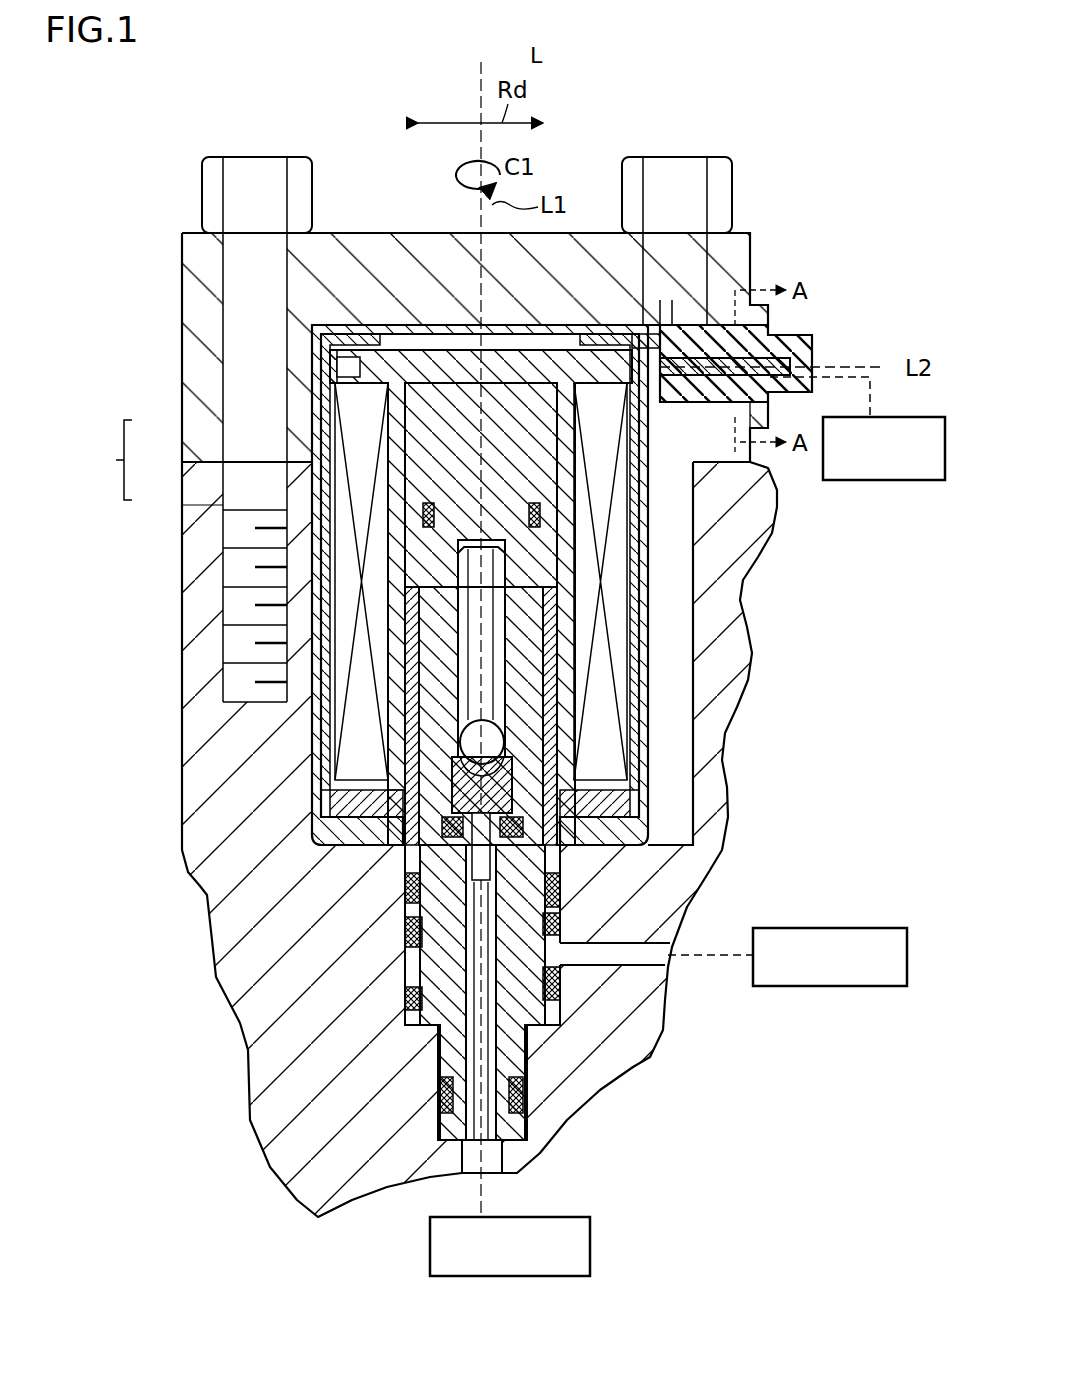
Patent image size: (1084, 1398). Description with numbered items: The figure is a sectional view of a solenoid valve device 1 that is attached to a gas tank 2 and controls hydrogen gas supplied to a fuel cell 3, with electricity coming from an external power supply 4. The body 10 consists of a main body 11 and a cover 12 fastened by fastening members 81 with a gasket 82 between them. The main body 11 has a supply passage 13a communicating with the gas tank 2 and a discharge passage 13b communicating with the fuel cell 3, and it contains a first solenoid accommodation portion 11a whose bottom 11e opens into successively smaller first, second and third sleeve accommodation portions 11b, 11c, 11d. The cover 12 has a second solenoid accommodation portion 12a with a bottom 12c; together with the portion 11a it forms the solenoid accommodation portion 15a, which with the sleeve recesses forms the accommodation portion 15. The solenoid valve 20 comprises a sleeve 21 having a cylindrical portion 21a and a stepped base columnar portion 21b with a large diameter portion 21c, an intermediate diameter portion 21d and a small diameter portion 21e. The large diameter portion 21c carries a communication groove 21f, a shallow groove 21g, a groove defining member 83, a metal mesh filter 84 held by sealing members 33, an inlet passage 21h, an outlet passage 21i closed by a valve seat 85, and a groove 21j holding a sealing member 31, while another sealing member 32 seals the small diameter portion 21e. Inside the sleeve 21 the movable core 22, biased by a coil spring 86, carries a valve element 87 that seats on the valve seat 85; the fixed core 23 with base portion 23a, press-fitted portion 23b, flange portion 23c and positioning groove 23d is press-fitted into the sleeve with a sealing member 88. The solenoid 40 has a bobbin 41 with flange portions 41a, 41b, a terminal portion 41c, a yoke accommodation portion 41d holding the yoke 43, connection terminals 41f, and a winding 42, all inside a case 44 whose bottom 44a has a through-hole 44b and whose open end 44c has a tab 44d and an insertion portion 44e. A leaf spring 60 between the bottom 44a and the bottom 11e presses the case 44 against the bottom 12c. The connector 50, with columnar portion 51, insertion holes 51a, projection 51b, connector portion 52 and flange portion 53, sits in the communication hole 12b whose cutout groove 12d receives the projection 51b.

The solenoid valve device 1 is at (358, 152).
The gas tank 2 is at (860, 928).
The fuel cell 3 is at (591, 1247).
The power supply 4 is at (906, 417).
The body 10 is at (107, 460).
The main body 11 is at (180, 486).
The first solenoid accommodation portion 11a is at (320, 858).
The first sleeve accommodation portion 11b is at (404, 950).
The second sleeve accommodation portion 11c is at (436, 1058).
The third sleeve accommodation portion 11d is at (460, 1138).
The bottom 11e is at (348, 900).
The cover 12 is at (180, 444).
The second solenoid accommodation portion 12a is at (756, 464).
The communication hole 12b is at (748, 430).
The bottom 12c is at (466, 328).
The cutout groove 12d is at (782, 340).
The supply passage 13a is at (688, 945).
The discharge passage 13b is at (462, 1175).
The accommodation portion 15 is at (672, 614).
The solenoid accommodation portion 15a is at (693, 685).
The solenoid valve 20 is at (489, 342).
The sleeve 21 is at (403, 727).
The cylindrical portion 21a is at (558, 753).
The base columnar portion 21b is at (548, 905).
The large diameter portion 21c is at (560, 985).
The intermediate diameter portion 21d is at (527, 1062).
The small diameter portion 21e is at (524, 1092).
The communication groove 21f is at (404, 996).
The shallow groove 21g is at (404, 921).
The inlet passage 21h is at (404, 888).
The outlet passage 21i is at (502, 1150).
The groove 21j is at (538, 880).
The movable core 22 is at (481, 513).
The fixed core 23 is at (418, 350).
The base portion 23a is at (530, 350).
The press-fitted portion 23b is at (398, 540).
The flange portion 23c is at (336, 343).
The positioning groove 23d is at (380, 384).
The sealing member 31 is at (561, 890).
The sealing member 32 is at (524, 1095).
The sealing members 33 is at (561, 935).
The solenoid 40 is at (655, 558).
The bobbin 41 is at (578, 350).
The flange portion 41a is at (330, 796).
The flange portion 41b is at (330, 380).
The terminal portion 41c is at (648, 334).
The yoke accommodation portion 41d is at (632, 800).
The connection terminals 41f is at (793, 366).
The winding 42 is at (340, 446).
The yoke 43 is at (326, 812).
The case 44 is at (652, 840).
The bottom 44a is at (322, 832).
The through-hole 44b is at (490, 868).
The open end 44c is at (618, 326).
The tab 44d is at (345, 326).
The insertion portion 44e is at (470, 400).
The connector 50 is at (782, 328).
The columnar portion 51 is at (676, 300).
The insertion holes 51a is at (664, 403).
The projection 51b is at (700, 325).
The connector portion 52 is at (812, 390).
The flange portion 53 is at (748, 304).
The leaf spring 60 is at (622, 848).
The fastening members 81 is at (212, 158).
The gasket 82 is at (188, 512).
The groove defining member 83 is at (548, 1040).
The metal mesh filter 84 is at (660, 967).
The valve seat 85 is at (448, 840).
The coil spring 86 is at (483, 545).
The valve element 87 is at (438, 786).
The sealing member 88 is at (426, 585).